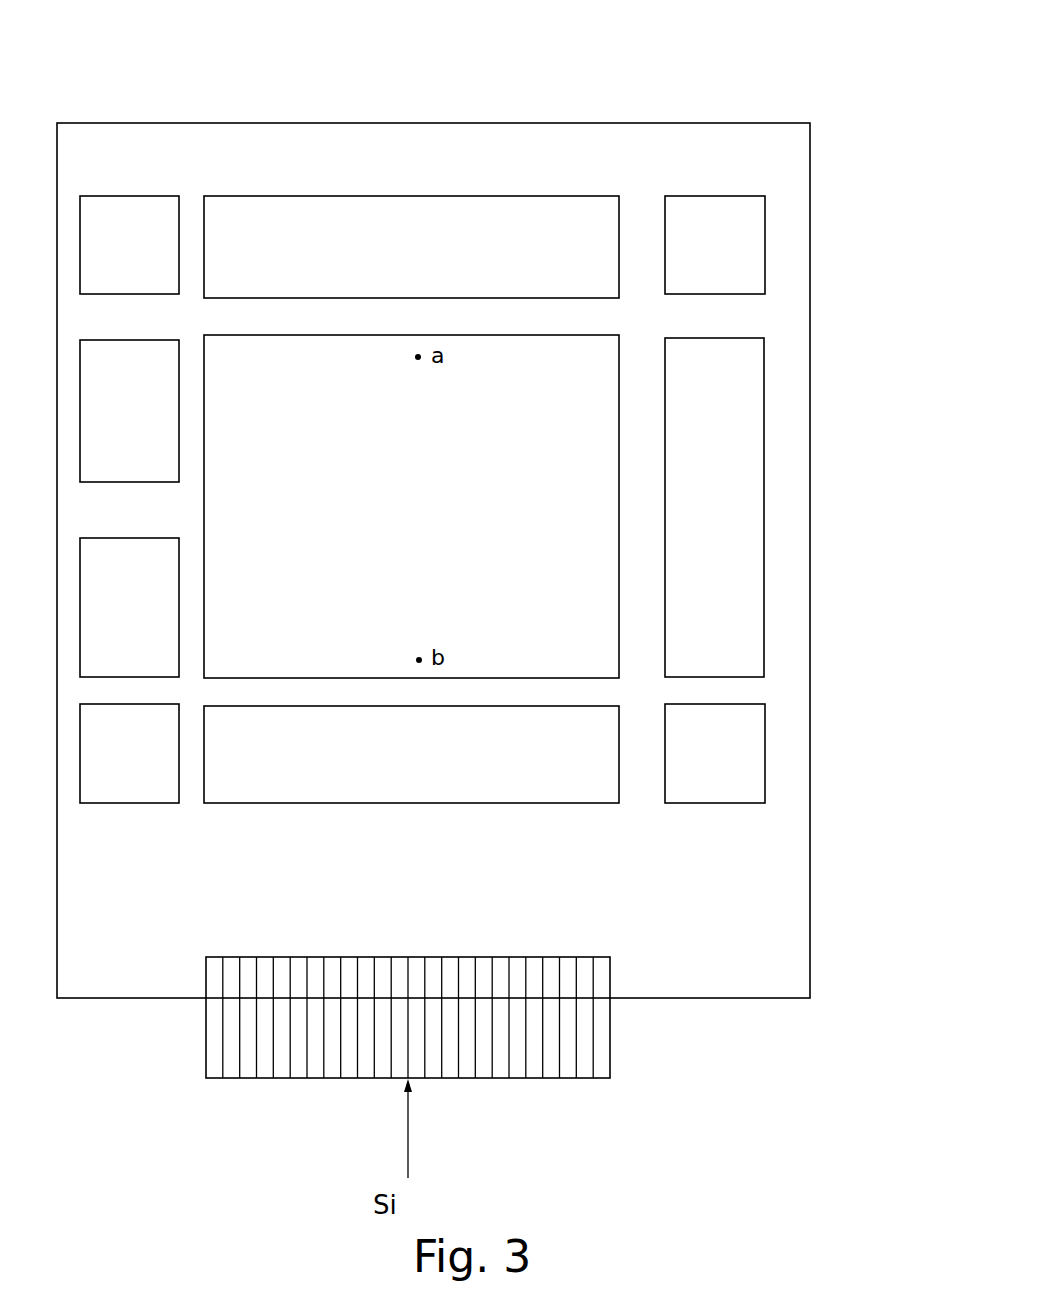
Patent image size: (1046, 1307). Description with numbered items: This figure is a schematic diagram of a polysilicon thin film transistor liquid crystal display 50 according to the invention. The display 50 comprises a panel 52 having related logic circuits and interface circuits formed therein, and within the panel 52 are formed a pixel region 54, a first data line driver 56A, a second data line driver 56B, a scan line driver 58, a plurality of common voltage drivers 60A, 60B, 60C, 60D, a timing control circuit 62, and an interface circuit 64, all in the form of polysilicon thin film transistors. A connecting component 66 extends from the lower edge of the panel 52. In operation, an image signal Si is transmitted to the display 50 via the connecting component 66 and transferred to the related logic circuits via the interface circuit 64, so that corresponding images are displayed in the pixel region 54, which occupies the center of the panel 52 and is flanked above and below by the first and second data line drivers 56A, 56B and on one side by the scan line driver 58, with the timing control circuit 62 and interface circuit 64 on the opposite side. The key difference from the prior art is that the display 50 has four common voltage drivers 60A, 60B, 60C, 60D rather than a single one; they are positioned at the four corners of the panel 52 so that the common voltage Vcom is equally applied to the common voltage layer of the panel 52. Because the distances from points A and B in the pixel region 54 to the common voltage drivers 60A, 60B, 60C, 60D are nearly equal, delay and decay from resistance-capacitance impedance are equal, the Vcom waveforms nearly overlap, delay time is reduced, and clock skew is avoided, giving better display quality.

The polysilicon thin film transistor liquid crystal display 50 is at (769, 96).
The panel 52 is at (810, 248).
The pixel region 54 is at (434, 525).
The first data line driver 56A is at (450, 262).
The second data line driver 56B is at (450, 767).
The scan line driver 58 is at (734, 528).
The common voltage driver 60A is at (158, 257).
The common voltage driver 60B is at (743, 257).
The common voltage driver 60C is at (158, 767).
The common voltage driver 60D is at (744, 767).
The timing control circuit 62 is at (150, 421).
The interface circuit 64 is at (138, 615).
The connecting component 66 is at (577, 1043).